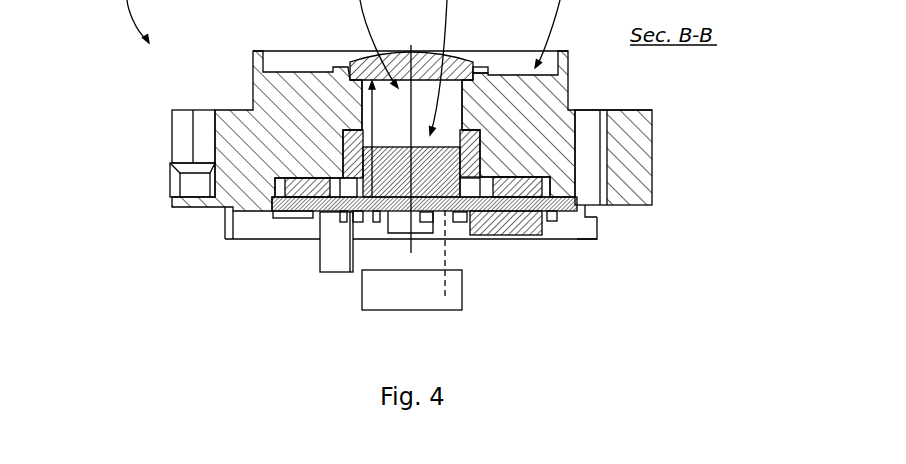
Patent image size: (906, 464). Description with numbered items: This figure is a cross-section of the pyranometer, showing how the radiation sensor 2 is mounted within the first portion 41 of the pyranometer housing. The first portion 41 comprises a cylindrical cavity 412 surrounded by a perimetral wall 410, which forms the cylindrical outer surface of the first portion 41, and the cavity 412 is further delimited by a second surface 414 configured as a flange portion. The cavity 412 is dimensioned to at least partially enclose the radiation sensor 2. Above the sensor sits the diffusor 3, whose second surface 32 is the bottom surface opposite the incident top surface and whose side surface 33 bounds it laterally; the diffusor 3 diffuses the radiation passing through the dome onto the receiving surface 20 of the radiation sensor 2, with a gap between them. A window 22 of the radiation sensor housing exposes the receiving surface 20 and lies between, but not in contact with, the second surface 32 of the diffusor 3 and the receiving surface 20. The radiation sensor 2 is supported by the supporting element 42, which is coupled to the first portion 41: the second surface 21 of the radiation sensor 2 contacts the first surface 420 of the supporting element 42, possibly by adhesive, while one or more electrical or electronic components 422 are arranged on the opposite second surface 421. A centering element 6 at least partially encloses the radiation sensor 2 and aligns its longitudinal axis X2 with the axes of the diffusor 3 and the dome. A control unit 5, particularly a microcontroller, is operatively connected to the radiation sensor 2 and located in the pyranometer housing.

The first portion 41 is at (263, 97).
The perimetral wall 410 is at (658, 130).
The second surface 414 is at (631, 107).
The diffusor 3 is at (350, 62).
The receiving surface 20 is at (432, 50).
The side surface 33 is at (486, 72).
The second surface 32 is at (400, 198).
The first surface 420 is at (287, 188).
The second surface 21 is at (378, 206).
The electrical or electronic component 422 is at (300, 224).
The window 22 is at (357, 214).
The radiation sensor 2 is at (426, 230).
The centering element 6 is at (515, 225).
The supporting element 42 is at (602, 210).
The cavity 412 is at (578, 241).
The second surface 421 is at (565, 235).
The longitudinal axis X2 is at (447, 305).
The control unit 5 is at (418, 300).